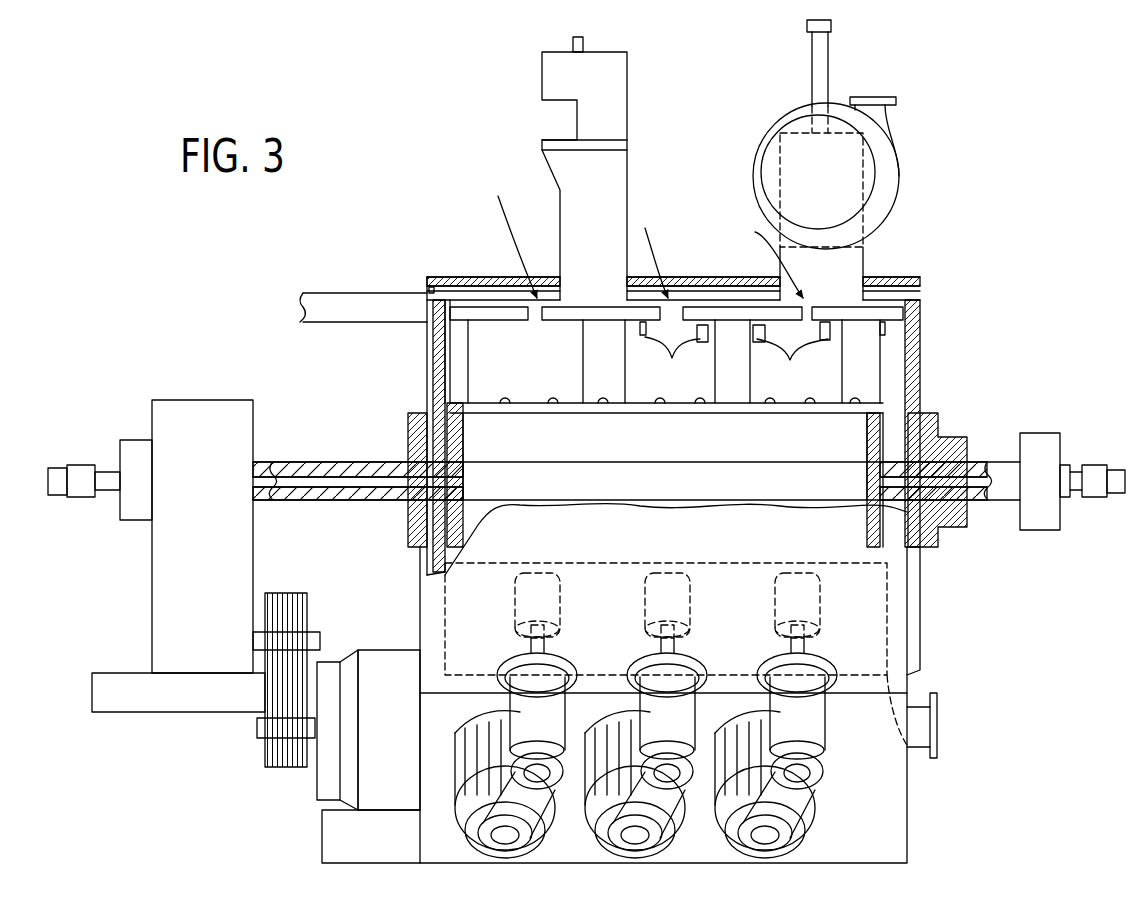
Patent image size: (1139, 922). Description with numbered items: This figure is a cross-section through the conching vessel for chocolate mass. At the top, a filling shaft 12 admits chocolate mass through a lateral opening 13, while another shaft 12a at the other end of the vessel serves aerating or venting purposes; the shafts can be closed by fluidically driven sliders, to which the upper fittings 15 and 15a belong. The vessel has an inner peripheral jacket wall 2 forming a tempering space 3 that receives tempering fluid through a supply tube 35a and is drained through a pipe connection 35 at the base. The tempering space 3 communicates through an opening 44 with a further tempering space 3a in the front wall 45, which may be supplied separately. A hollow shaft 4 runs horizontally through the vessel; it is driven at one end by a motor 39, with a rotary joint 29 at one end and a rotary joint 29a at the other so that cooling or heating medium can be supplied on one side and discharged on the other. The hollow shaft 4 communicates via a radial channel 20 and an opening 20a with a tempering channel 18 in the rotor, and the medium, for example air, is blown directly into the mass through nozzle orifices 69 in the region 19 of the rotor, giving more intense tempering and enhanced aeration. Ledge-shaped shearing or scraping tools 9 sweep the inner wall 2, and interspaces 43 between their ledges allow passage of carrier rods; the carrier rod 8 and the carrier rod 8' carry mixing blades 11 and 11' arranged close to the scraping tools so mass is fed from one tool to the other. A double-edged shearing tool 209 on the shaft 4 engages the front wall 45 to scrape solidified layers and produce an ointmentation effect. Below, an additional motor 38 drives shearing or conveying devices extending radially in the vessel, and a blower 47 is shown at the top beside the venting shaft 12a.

The inner peripheral jacket wall 2 is at (483, 300).
The tempering space 3 is at (505, 300).
The further tempering space 3a is at (430, 380).
The hollow shaft 4 is at (318, 462).
The carrier rod 8 is at (731, 388).
The carrier rod 8' is at (754, 388).
The shearing or scraping tool 9 is at (455, 307).
The mixing blade 11 is at (819, 356).
The mixing blade 11' is at (674, 357).
The filling shaft 12 is at (613, 88).
The shaft 12a is at (885, 215).
The lateral opening 13 is at (550, 127).
The rod 15 is at (828, 52).
The knob 15a is at (583, 46).
The tempering channel 18 is at (490, 415).
The chamber 19 is at (515, 415).
The radial channel 20 is at (888, 433).
The opening 20a is at (885, 430).
The rotary joint 29 is at (1093, 472).
The rotary joint 29a is at (82, 468).
The pipe connection 35 is at (937, 722).
The supply tube 35a is at (330, 292).
The additional motor 38 is at (790, 840).
The motor 39 is at (370, 772).
The interspace 43 is at (644, 233).
The opening 44 is at (430, 289).
The front wall 45 is at (447, 340).
The blower 47 is at (890, 142).
The nozzle orifice 69 is at (603, 400).
The double-edged shearing tool 209 is at (443, 357).